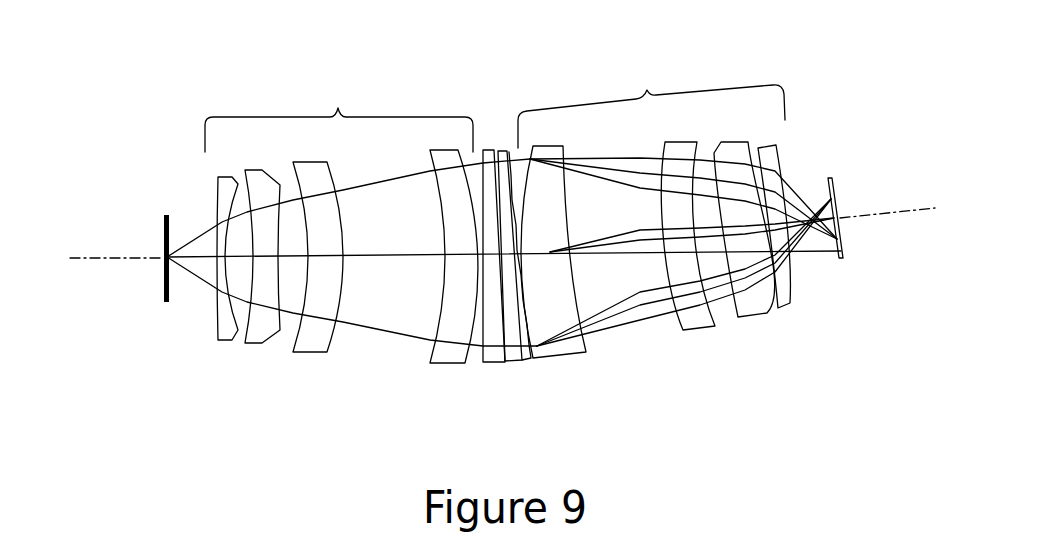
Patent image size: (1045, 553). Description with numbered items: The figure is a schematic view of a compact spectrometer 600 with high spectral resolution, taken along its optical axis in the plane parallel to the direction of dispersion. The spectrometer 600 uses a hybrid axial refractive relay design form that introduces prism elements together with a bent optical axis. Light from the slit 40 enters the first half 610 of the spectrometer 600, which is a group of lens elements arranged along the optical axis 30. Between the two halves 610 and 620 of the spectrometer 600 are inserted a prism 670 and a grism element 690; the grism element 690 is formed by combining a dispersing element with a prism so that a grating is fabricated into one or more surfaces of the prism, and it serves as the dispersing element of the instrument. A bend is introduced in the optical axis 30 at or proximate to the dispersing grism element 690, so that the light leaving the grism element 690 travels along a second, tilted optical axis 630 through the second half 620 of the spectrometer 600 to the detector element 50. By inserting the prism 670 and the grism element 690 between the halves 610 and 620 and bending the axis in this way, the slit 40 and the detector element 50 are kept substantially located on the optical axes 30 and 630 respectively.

The spectrometer 600 is at (142, 92).
The optical axis 30 is at (100, 258).
The slit 40 is at (162, 237).
The first half of the spectrometer 610 is at (338, 108).
The prism 670 is at (494, 363).
The grism element 690 is at (519, 362).
The second half of the spectrometer 620 is at (647, 90).
The detector element 50 is at (843, 203).
The optical axis 630 is at (890, 212).